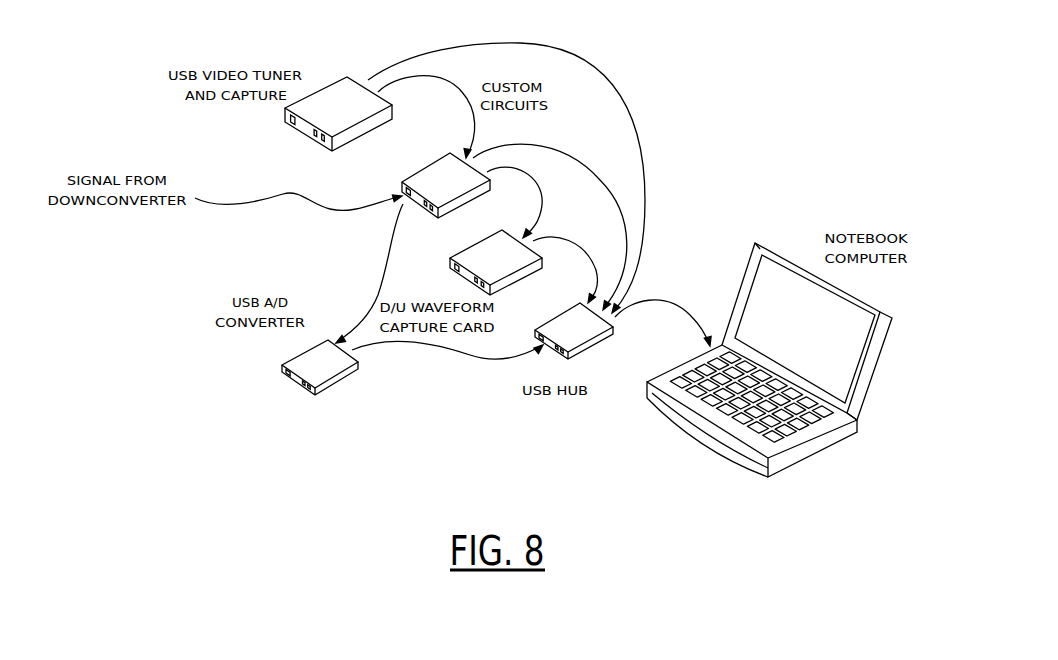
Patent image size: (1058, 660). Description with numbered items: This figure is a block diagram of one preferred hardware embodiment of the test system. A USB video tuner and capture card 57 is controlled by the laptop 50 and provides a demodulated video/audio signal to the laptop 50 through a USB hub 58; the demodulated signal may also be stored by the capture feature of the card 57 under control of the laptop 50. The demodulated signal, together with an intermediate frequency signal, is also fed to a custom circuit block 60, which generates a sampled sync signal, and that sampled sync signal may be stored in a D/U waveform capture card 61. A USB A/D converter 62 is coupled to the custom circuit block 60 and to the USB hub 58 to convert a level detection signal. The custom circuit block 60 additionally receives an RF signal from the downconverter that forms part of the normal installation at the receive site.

The USB video tuner and capture card 57 is at (327, 97).
The custom circuit block 60 is at (427, 172).
The D/U waveform capture card 61 is at (473, 252).
The USB hub 58 is at (581, 342).
The USB A/D converter 62 is at (331, 381).
The laptop 50 is at (690, 437).